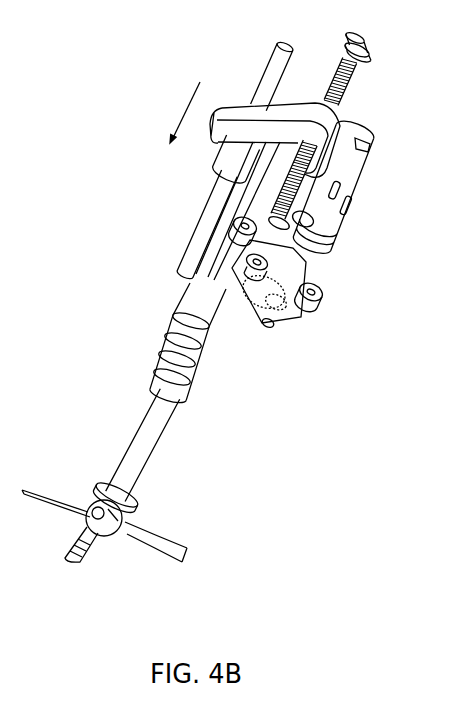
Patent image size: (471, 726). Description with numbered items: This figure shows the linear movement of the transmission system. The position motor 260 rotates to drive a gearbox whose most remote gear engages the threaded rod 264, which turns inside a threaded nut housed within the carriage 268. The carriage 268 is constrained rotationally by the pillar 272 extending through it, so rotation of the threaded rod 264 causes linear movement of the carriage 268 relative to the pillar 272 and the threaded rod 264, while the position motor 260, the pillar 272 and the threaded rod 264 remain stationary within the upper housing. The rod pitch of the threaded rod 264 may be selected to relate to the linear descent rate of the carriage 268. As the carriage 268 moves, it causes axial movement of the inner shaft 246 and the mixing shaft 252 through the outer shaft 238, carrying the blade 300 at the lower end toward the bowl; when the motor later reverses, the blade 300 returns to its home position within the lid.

The outer shaft 238 is at (198, 339).
The inner shaft 246 is at (250, 205).
The mixing shaft 252 is at (132, 453).
The position motor 260 is at (310, 253).
The threaded rod 264 is at (355, 67).
The carriage 268 is at (340, 150).
The pillar 272 is at (200, 248).
The blade 300 is at (172, 546).